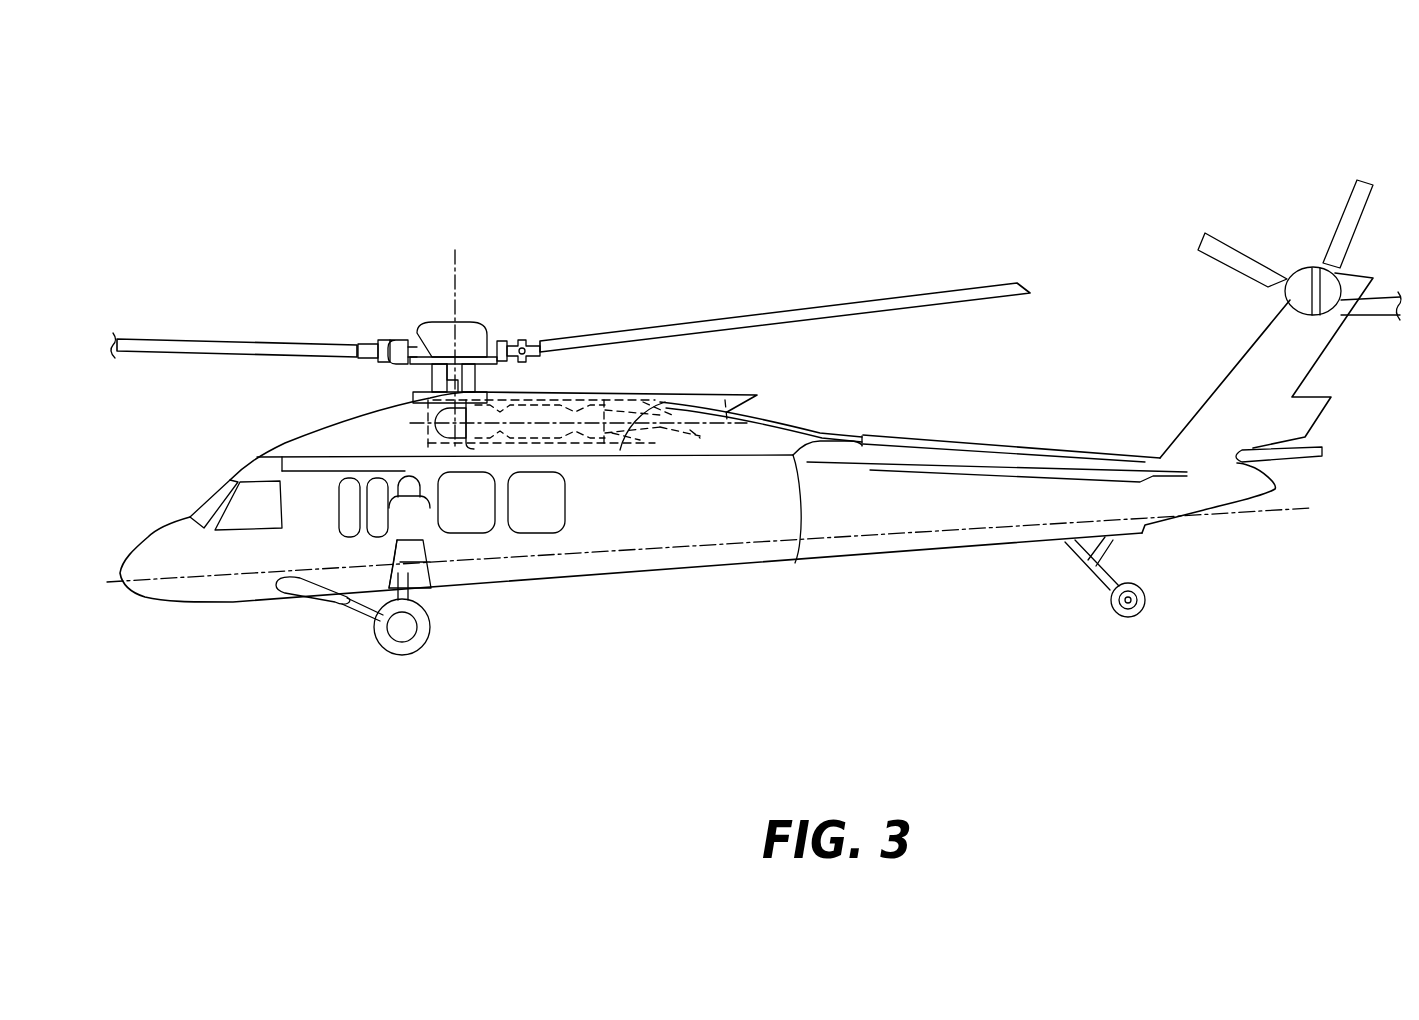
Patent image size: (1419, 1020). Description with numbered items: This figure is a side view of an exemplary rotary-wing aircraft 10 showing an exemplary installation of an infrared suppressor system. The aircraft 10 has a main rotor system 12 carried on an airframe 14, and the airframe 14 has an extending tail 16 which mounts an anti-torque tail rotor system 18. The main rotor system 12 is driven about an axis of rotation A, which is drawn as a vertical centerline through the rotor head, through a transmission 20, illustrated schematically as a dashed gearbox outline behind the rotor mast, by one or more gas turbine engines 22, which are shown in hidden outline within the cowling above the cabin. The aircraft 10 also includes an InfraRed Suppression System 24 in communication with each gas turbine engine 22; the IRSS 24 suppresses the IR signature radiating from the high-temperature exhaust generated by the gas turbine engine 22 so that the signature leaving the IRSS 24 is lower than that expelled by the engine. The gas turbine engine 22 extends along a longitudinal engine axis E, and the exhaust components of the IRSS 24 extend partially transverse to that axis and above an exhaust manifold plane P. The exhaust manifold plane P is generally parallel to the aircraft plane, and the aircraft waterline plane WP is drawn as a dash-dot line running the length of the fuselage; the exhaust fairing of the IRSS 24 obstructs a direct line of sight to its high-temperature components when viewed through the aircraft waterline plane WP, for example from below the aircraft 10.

The rotary-wing aircraft 10 is at (1082, 194).
The main rotor system 12 is at (582, 281).
The airframe 14 is at (495, 577).
The extending tail 16 is at (952, 535).
The anti-torque tail rotor system 18 is at (1342, 222).
The transmission 20 is at (430, 446).
The gas turbine engine 22 is at (606, 396).
The InfraRed Suppression System 24 is at (781, 396).
The axis of rotation A is at (457, 288).
The longitudinal engine axis E is at (615, 428).
The exhaust manifold plane P is at (693, 433).
The aircraft waterline plane WP is at (1217, 513).